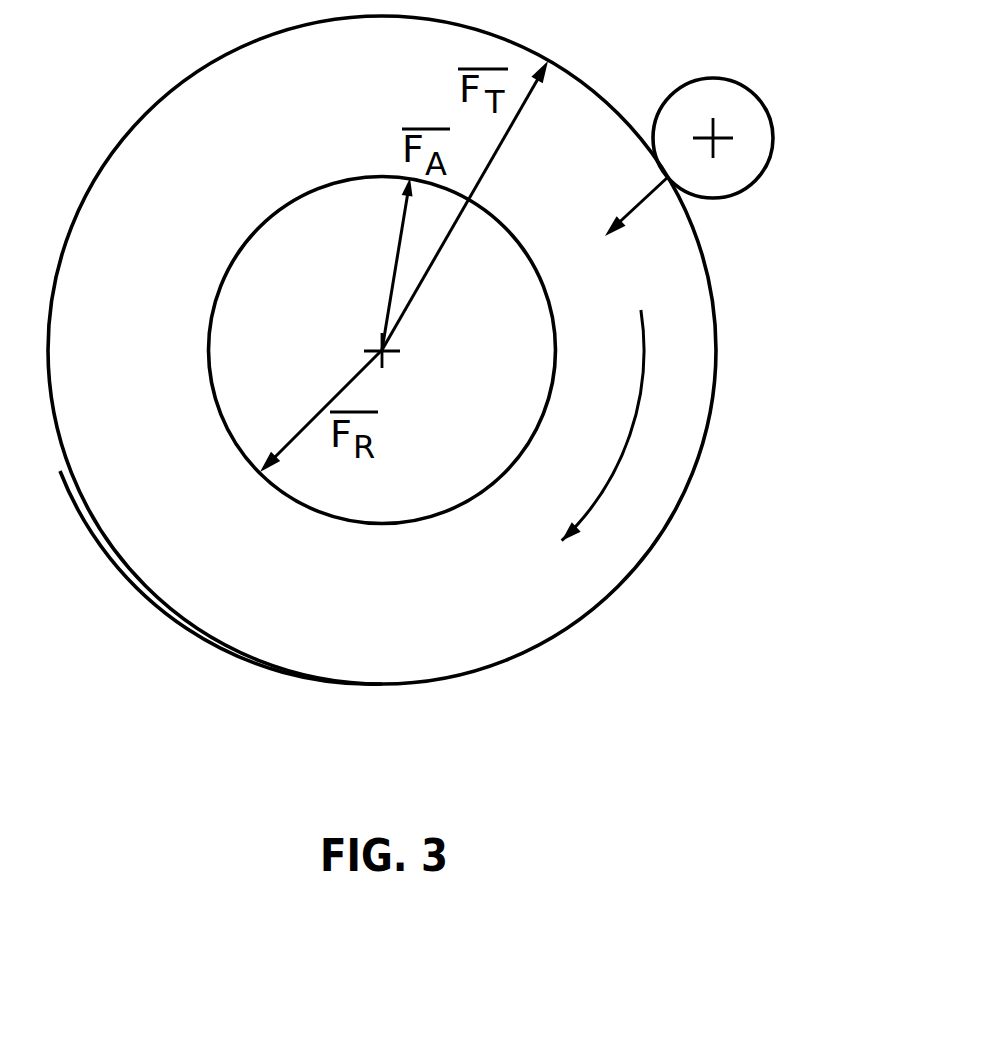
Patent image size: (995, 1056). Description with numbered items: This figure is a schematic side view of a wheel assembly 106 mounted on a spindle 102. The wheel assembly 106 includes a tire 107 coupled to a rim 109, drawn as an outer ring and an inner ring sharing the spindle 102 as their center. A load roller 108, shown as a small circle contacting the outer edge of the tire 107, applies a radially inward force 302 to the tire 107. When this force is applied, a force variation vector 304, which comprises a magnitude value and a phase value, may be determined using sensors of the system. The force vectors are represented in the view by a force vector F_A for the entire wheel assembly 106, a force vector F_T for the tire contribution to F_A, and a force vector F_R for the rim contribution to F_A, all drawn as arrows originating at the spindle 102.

The spindle 102 is at (386, 357).
The wheel assembly 106 is at (741, 372).
The tire 107 is at (292, 672).
The load roller 108 is at (712, 78).
The rim 109 is at (285, 494).
The radially inward force 302 is at (645, 195).
The force variation vector 304 is at (393, 267).